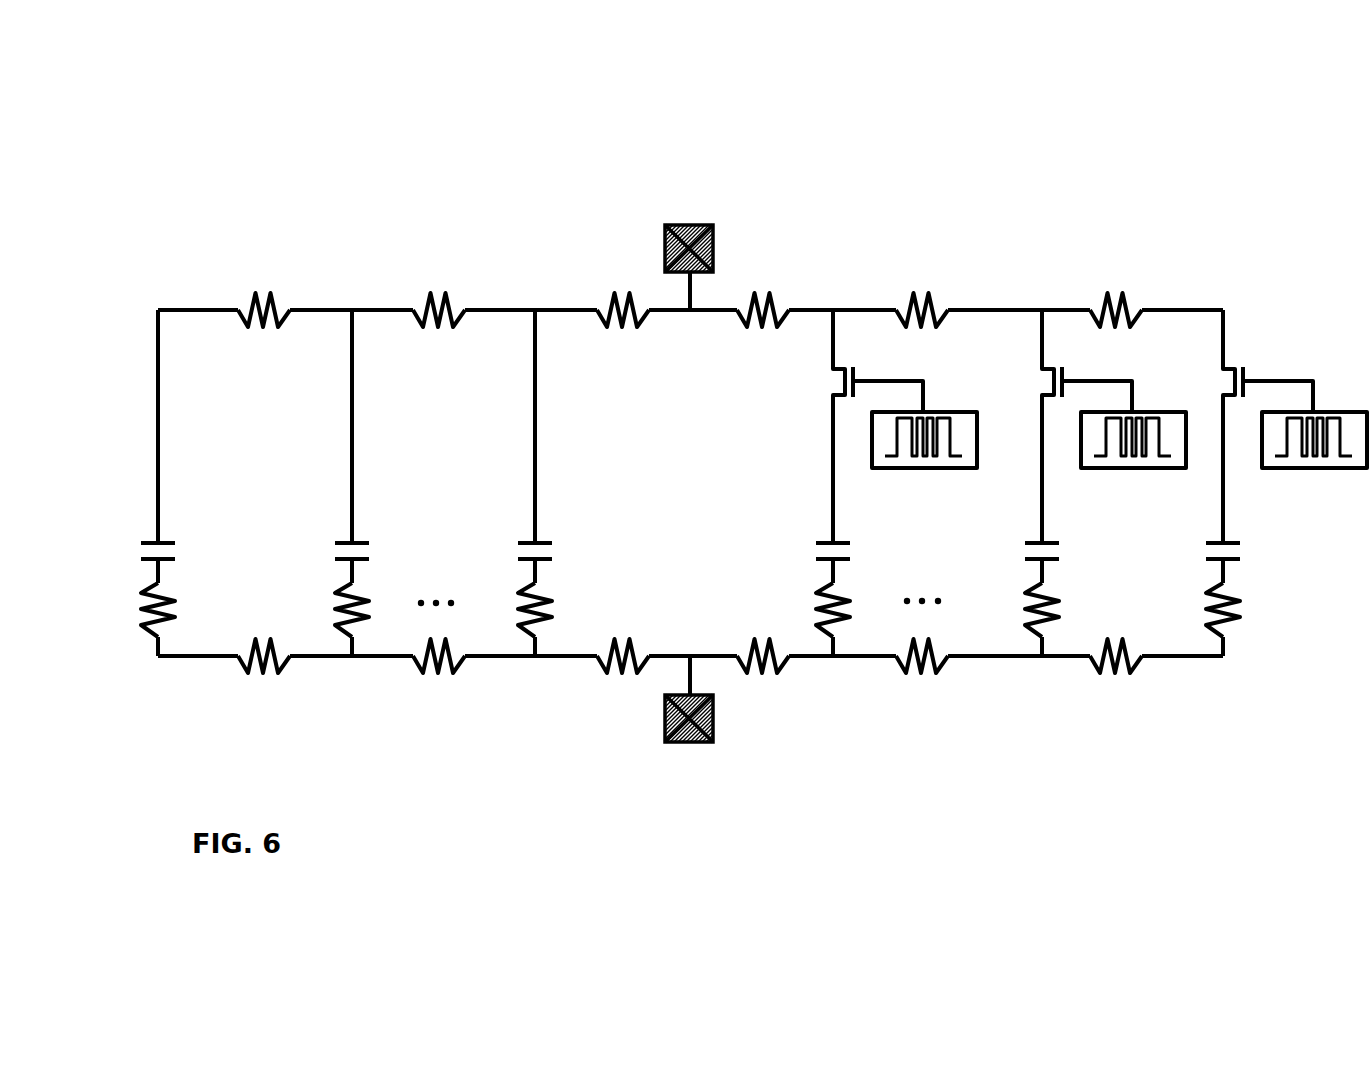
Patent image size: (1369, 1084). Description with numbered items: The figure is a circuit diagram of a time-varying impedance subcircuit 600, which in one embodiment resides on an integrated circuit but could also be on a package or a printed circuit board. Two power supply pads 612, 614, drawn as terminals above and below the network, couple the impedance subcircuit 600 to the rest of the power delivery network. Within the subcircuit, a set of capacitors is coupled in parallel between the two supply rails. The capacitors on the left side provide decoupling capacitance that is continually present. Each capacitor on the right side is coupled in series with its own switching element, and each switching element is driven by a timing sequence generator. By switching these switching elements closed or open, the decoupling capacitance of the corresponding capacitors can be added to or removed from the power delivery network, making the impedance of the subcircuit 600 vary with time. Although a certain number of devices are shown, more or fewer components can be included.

The impedance subcircuit 600 is at (1065, 258).
The power supply pad 612 is at (692, 222).
The power supply pad 614 is at (685, 745).